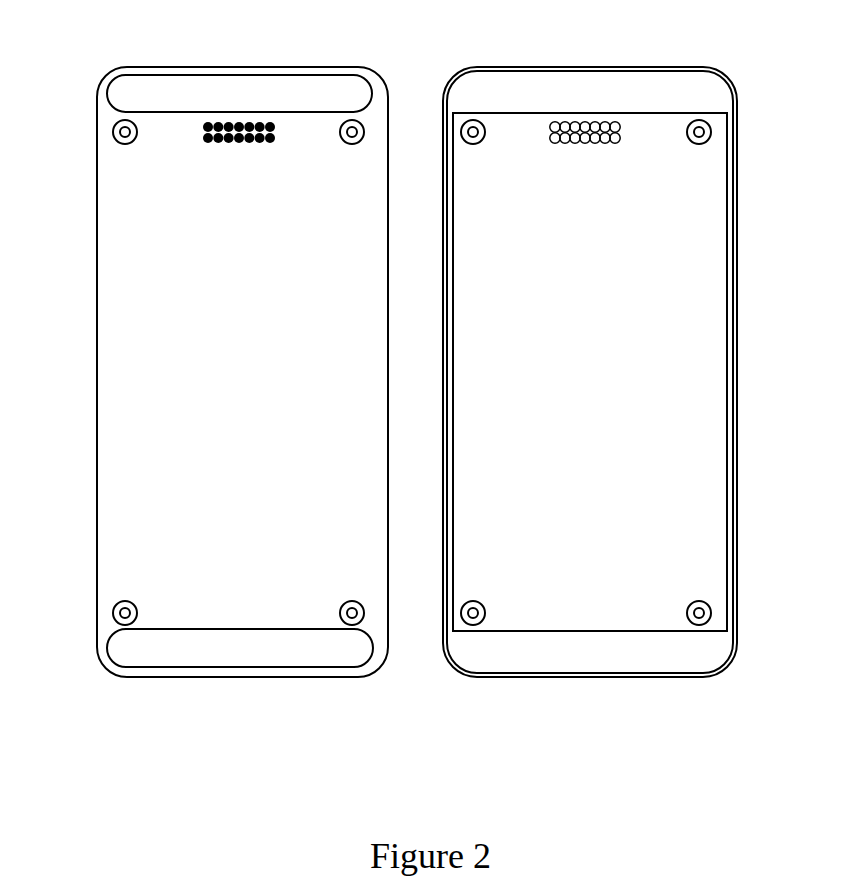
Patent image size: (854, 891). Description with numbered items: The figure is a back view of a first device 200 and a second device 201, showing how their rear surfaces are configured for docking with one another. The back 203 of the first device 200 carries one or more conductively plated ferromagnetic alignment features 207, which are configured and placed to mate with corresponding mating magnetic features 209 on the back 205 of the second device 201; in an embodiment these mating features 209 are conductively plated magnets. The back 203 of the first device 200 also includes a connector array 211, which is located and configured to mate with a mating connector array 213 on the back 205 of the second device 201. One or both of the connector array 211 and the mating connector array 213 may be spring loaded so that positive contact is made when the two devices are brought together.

The first device 200 is at (204, 405).
The second device 201 is at (619, 388).
The back of the first device 203 is at (110, 447).
The back of the second device 205 is at (710, 477).
The conductively plated ferromagnetic alignment feature 207 is at (113, 131).
The mating magnetic feature 209 is at (700, 120).
The connector array 211 is at (263, 123).
The mating connector array 213 is at (610, 121).